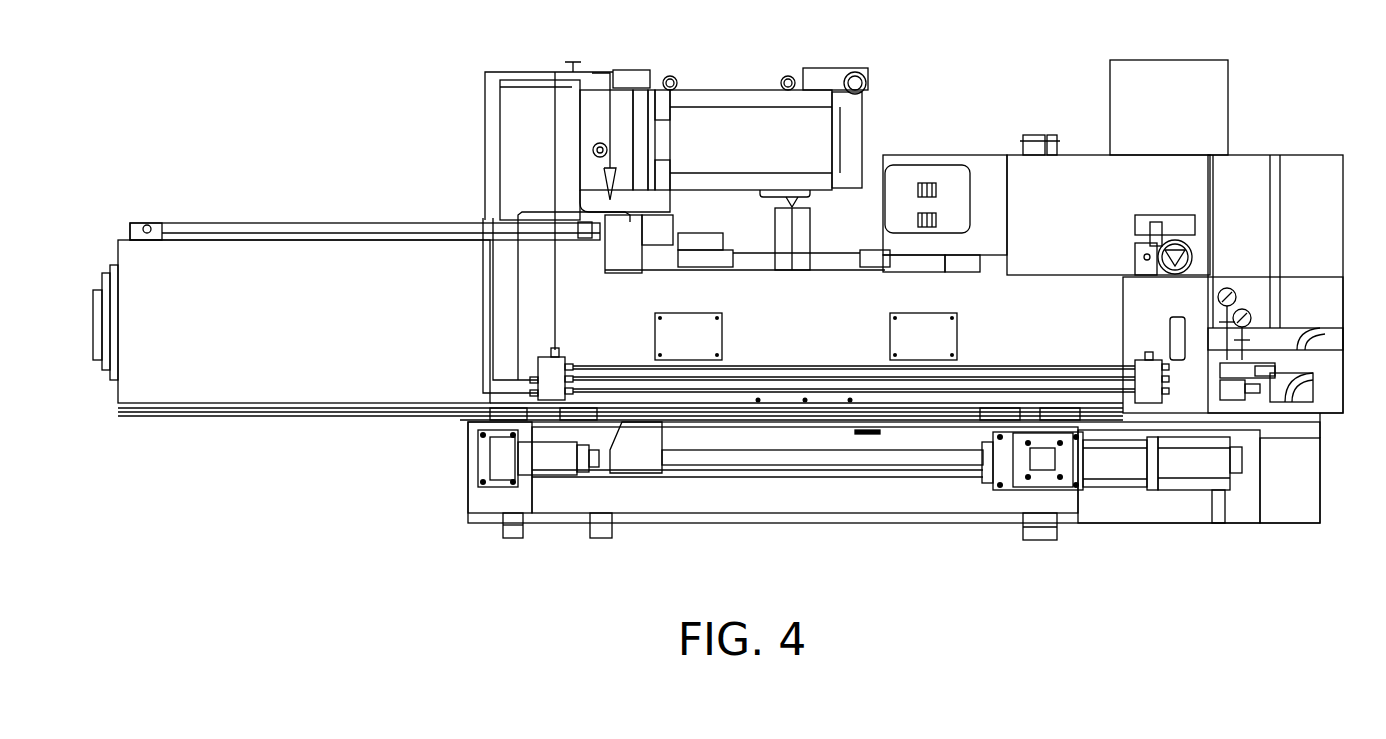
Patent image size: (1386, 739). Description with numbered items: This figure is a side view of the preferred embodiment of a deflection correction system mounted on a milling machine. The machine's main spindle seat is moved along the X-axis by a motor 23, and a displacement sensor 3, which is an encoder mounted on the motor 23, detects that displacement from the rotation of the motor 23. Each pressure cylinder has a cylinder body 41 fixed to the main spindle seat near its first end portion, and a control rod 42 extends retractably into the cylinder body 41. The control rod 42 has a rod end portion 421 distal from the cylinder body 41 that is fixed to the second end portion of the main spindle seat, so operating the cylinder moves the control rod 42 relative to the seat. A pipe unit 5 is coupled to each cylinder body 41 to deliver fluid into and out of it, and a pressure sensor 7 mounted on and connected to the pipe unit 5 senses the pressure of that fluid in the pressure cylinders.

The displacement sensor 3 is at (1252, 460).
The pipe unit 5 is at (1316, 322).
The pressure sensor 7 is at (1230, 283).
The motor 23 is at (1183, 482).
The cylinder body 41 is at (662, 228).
The control rod 42 is at (273, 228).
The rod end portion 421 is at (167, 228).